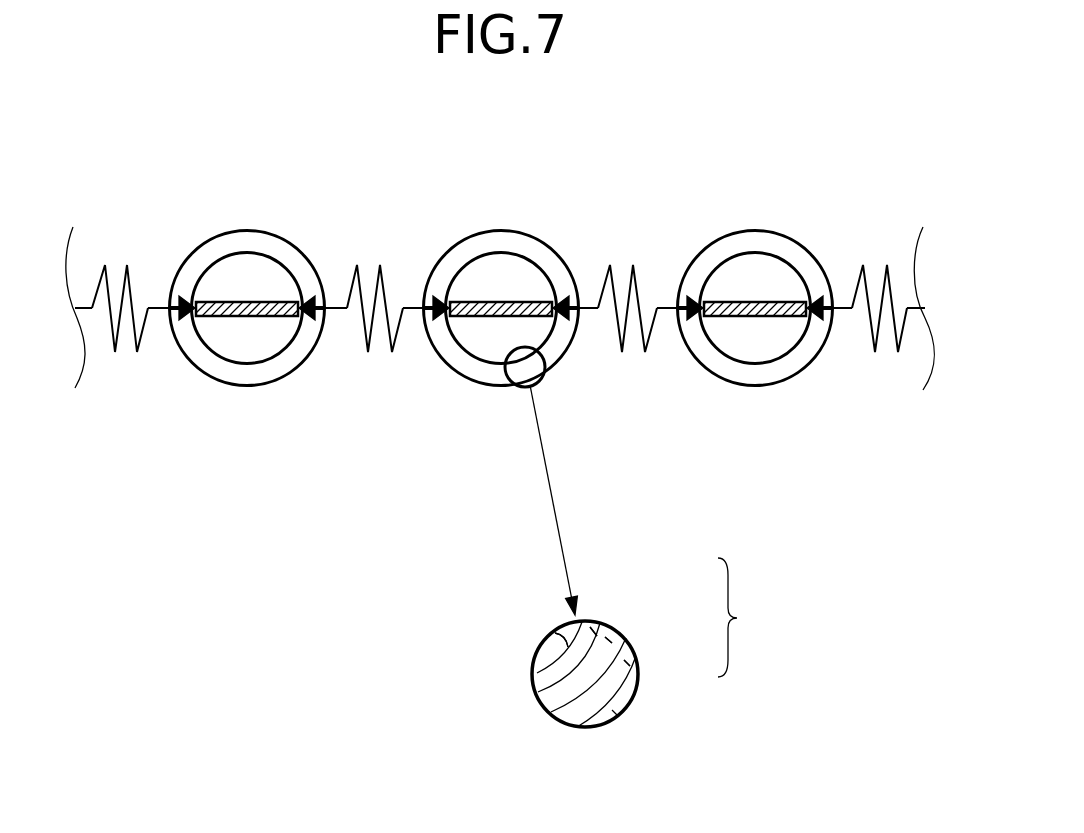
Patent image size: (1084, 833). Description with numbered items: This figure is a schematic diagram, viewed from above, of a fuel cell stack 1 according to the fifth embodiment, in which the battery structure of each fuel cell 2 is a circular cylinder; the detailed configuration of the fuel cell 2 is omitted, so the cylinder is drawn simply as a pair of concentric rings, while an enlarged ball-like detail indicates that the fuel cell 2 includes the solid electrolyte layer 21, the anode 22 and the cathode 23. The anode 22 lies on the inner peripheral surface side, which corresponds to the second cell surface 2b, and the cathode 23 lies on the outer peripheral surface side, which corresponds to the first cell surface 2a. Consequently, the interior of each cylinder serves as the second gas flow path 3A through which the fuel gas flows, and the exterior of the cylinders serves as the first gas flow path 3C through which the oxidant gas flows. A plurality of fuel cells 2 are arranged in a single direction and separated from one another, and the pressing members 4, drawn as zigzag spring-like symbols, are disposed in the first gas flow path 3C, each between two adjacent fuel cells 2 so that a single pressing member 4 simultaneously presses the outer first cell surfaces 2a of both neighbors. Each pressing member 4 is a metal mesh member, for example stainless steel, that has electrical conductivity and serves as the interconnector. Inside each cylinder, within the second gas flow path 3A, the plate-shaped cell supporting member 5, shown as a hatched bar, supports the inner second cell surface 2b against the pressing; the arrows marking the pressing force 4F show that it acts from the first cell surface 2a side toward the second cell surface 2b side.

The fuel cell stack 1 is at (500, 425).
The fuel cell 2 is at (500, 373).
The first cell surface 2a is at (558, 630).
The second cell surface 2b is at (612, 710).
The solid electrolyte layer 21 is at (615, 632).
The anode 22 is at (636, 647).
The cathode 23 is at (593, 618).
The second gas flow path 3A is at (477, 332).
The first gas flow path 3C is at (565, 382).
The pressing member 4 is at (383, 266).
The pressing force 4F is at (442, 297).
The cell supporting member 5 is at (503, 302).